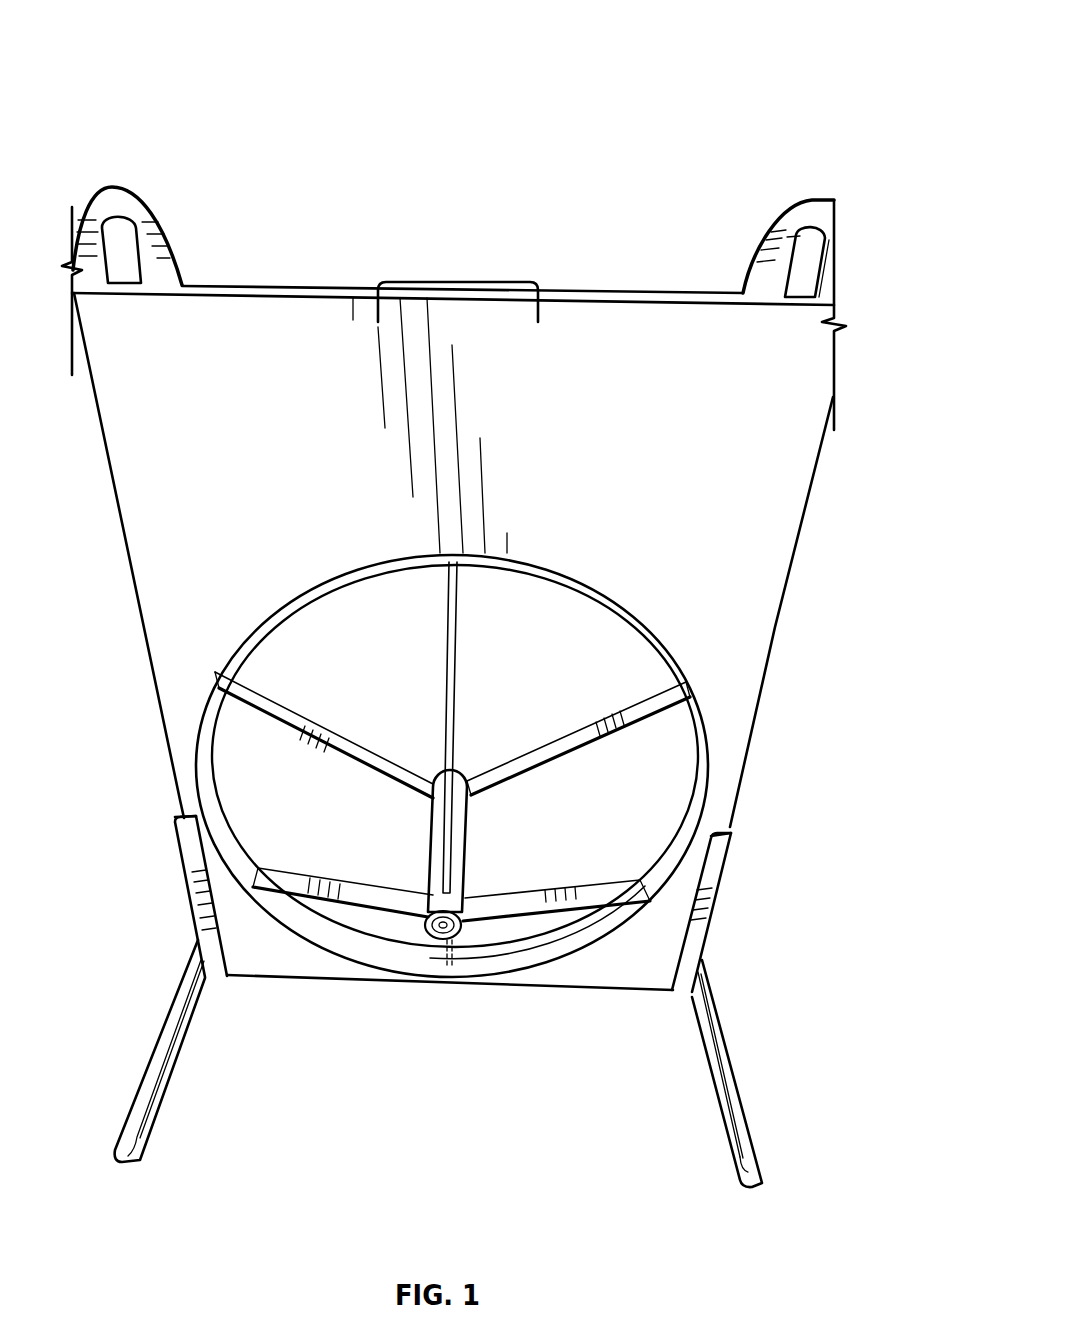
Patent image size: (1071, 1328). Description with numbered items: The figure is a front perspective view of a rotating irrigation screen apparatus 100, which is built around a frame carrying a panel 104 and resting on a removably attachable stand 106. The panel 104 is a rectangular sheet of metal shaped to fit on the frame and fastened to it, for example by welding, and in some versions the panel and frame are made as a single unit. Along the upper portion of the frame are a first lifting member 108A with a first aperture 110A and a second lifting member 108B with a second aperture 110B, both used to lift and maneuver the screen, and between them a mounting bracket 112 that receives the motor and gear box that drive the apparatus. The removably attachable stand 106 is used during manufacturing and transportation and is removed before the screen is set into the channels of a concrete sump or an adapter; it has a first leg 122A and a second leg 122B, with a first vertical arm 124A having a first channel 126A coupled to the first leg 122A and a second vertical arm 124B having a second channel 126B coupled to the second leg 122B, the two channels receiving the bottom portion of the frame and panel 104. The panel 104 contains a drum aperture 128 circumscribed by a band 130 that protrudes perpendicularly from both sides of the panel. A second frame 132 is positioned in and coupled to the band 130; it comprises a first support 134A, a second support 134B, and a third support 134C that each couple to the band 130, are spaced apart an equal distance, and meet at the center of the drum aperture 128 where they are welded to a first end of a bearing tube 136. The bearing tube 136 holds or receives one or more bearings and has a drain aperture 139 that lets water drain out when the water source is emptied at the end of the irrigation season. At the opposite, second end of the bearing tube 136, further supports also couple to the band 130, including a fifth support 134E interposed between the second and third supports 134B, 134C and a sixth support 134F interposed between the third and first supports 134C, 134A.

The rotating irrigation screen apparatus 100 is at (652, 50).
The panel 104 is at (735, 408).
The removably attachable stand 106 is at (743, 1170).
The first lifting member 108A is at (163, 262).
The second lifting member 108B is at (758, 280).
The first aperture 110A is at (121, 236).
The second aperture 110B is at (808, 230).
The mounting bracket 112 is at (470, 290).
The first leg 122A is at (170, 1048).
The second leg 122B is at (735, 1093).
The first vertical arm 124A is at (207, 932).
The second vertical arm 124B is at (697, 925).
The first channel 126A is at (174, 812).
The second channel 126B is at (736, 830).
The drum aperture 128 is at (288, 622).
The band 130 is at (362, 947).
The second frame 132 is at (483, 790).
The first support 134A is at (238, 689).
The second support 134B is at (672, 693).
The third support 134C is at (450, 942).
The fifth support 134E is at (607, 908).
The sixth support 134F is at (320, 890).
The bearing tube 136 is at (430, 940).
The drain aperture 139 is at (438, 940).